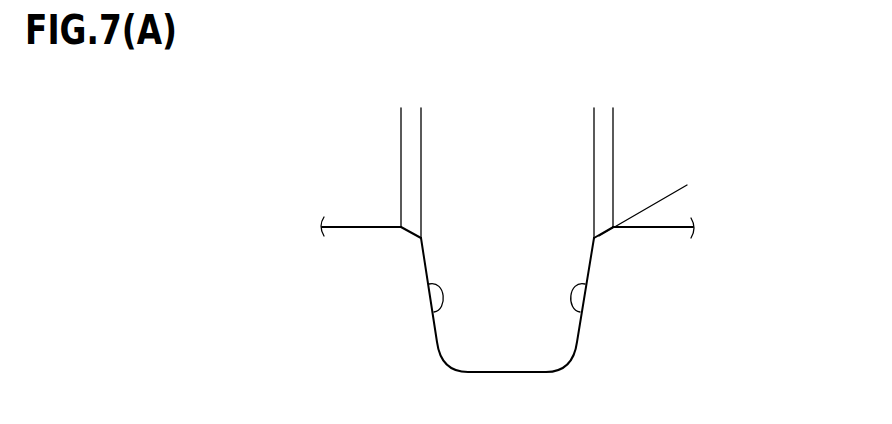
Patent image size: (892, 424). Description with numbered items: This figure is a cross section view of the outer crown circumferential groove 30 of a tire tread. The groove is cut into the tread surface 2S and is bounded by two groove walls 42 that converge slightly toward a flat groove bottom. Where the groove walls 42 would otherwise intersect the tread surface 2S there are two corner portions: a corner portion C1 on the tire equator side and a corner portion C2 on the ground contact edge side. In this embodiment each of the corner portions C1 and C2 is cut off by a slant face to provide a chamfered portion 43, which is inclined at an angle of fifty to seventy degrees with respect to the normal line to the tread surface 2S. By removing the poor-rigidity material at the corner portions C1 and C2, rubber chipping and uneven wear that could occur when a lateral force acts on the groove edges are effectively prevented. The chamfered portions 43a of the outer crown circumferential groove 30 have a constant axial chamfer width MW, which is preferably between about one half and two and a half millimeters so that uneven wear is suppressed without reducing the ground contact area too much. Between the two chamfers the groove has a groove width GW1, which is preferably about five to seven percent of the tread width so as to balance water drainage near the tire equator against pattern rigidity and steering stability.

The outer crown circumferential groove 30 is at (526, 305).
The tread surface 2S is at (665, 227).
The chamfered portion 43 is at (507, 265).
The chamfered portion of outer crown circumferential groove 43a is at (411, 234).
The groove wall 42 is at (436, 306).
The chamfer width MW is at (367, 115).
The groove width GW1 is at (594, 115).
The corner portion on tire equator side C1 is at (426, 236).
The corner portion on ground contact edge side C2 is at (588, 236).